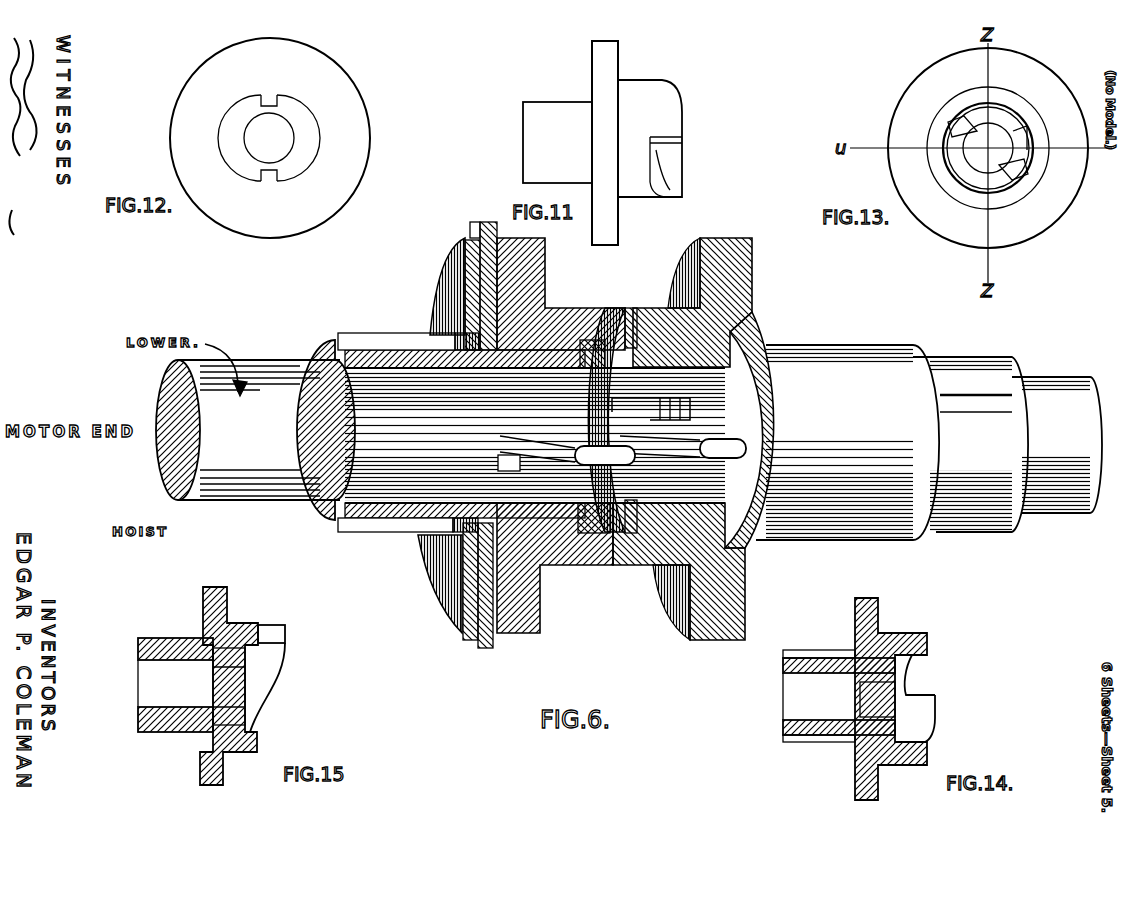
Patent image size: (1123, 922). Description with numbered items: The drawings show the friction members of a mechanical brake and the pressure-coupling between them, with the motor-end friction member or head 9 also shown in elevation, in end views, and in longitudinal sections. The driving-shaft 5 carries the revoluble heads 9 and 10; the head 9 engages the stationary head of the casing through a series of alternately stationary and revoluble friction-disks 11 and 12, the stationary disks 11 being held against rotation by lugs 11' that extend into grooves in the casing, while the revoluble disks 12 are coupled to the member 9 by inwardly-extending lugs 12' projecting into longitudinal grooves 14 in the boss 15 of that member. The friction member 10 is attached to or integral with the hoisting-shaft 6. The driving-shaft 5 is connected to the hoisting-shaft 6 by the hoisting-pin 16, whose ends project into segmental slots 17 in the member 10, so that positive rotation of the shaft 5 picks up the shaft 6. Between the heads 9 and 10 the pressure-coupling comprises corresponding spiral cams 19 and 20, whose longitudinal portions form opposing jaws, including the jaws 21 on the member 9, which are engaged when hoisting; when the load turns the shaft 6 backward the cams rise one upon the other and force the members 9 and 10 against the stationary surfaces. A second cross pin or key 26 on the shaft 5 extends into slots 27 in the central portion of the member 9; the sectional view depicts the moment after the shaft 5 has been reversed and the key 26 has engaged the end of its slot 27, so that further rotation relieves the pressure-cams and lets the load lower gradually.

In FIG. 6, the driving-shaft 5 is at (245, 362).
In FIG. 6, the hoisting-shaft 6 is at (828, 346).
In FIG. 12, the friction member or head 9 is at (335, 78).
In FIG. 11, the friction member or head 9 is at (618, 53).
In FIG. 13, the friction member or head 9 is at (1062, 98).
In FIG. 6, the friction member or head 9 is at (530, 276).
In FIG. 15, the friction member or head 9 is at (220, 603).
In FIG. 14, the friction member or head 9 is at (873, 606).
In FIG. 6, the friction member or head 10 is at (742, 273).
In FIG. 6, the stationary friction-disks 11 is at (440, 440).
In FIG. 6, the lugs 11' is at (475, 434).
In FIG. 6, the revoluble friction-disks 12 is at (430, 440).
In FIG. 6, the lugs 12' is at (428, 454).
In FIG. 12, the longitudinal grooves 14 is at (271, 100).
In FIG. 6, the longitudinal grooves 14 is at (348, 340).
In FIG. 14, the longitudinal grooves 14 is at (797, 657).
In FIG. 12, the boss 15 is at (302, 124).
In FIG. 11, the boss 15 is at (550, 112).
In FIG. 6, the boss 15 is at (320, 522).
In FIG. 15, the boss 15 is at (158, 724).
In FIG. 14, the boss 15 is at (790, 709).
In FIG. 6, the hoisting-pin 16 is at (730, 450).
In FIG. 6, the segmental slots 17 is at (612, 410).
In FIG. 11, the spiral cams 19 is at (684, 115).
In FIG. 13, the spiral cams 19 is at (940, 131).
In FIG. 6, the spiral cams 19 is at (620, 310).
In FIG. 15, the spiral cams 19 is at (285, 664).
In FIG. 14, the spiral cams 19 is at (932, 745).
In FIG. 6, the spiral cams 20 is at (640, 302).
In FIG. 11, the jaws 21 is at (684, 141).
In FIG. 13, the jaws 21 is at (1092, 148).
In FIG. 15, the jaws 21 is at (272, 632).
In FIG. 14, the jaws 21 is at (925, 695).
In FIG. 6, the cross pin or key 26 is at (508, 437).
In FIG. 13, the slots 27 is at (988, 148).
In FIG. 6, the slots 27 is at (503, 463).
In FIG. 15, the slots 27 is at (223, 715).
In FIG. 14, the slots 27 is at (877, 699).